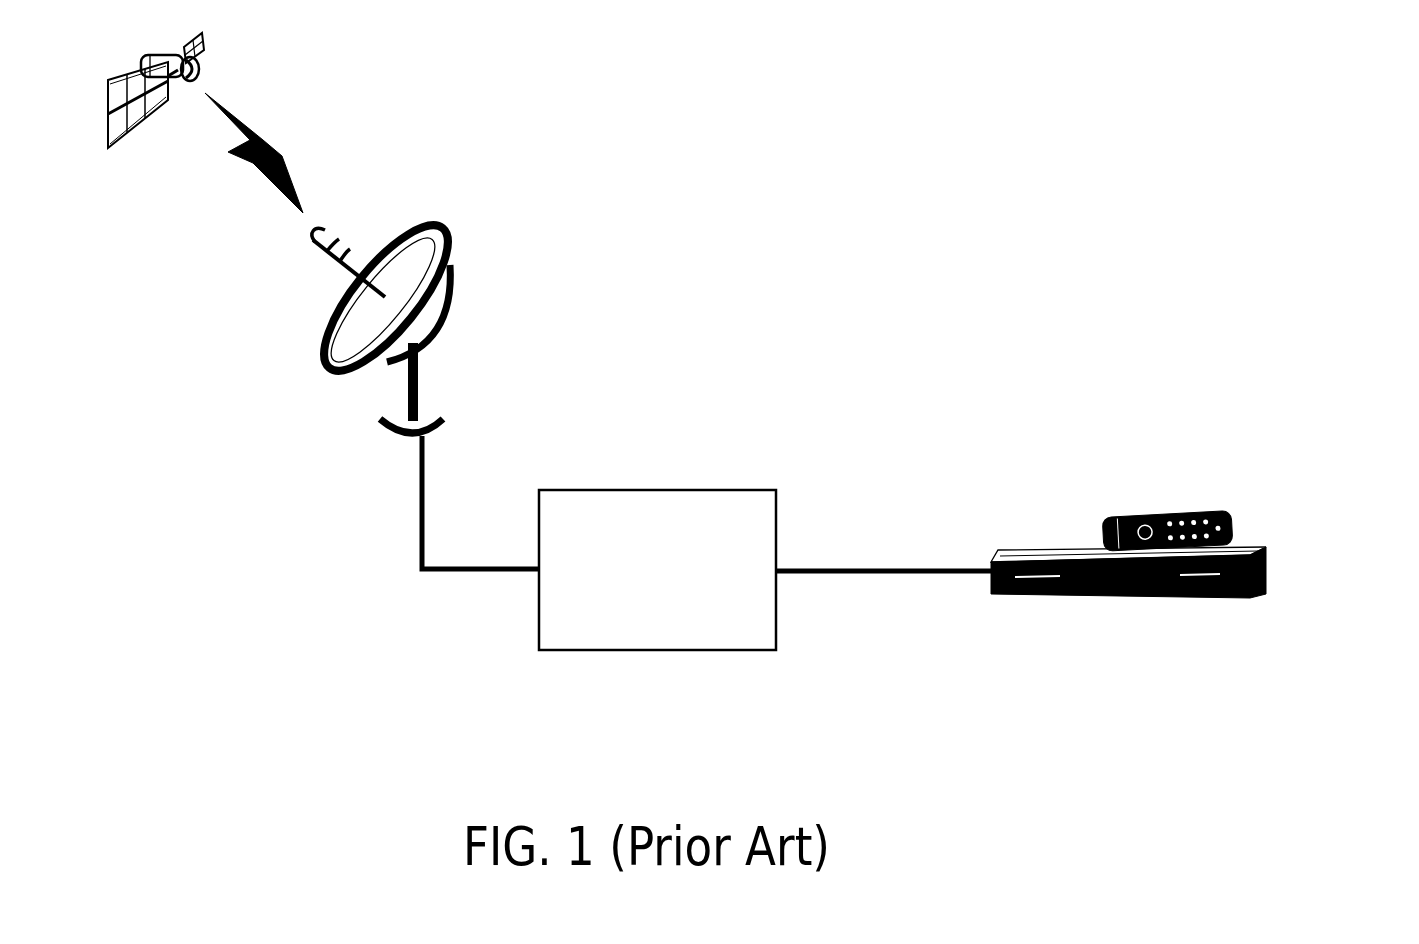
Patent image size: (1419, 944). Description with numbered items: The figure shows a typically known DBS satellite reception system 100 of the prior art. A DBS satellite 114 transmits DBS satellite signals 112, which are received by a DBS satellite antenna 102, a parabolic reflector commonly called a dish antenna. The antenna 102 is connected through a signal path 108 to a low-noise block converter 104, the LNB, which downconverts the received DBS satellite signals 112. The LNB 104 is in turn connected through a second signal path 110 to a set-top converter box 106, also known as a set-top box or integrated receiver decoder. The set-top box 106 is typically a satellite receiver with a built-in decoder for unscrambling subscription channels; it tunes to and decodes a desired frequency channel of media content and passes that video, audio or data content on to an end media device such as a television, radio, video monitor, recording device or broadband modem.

The DBS satellite reception system 100 is at (912, 173).
The DBS satellite antenna 102 is at (457, 265).
The low-noise block converter 104 is at (640, 634).
The set-top converter box 106 is at (1267, 568).
The signal path 108 is at (420, 492).
The signal path 110 is at (833, 568).
The DBS satellite signals 112 is at (285, 153).
The DBS satellite 114 is at (147, 112).